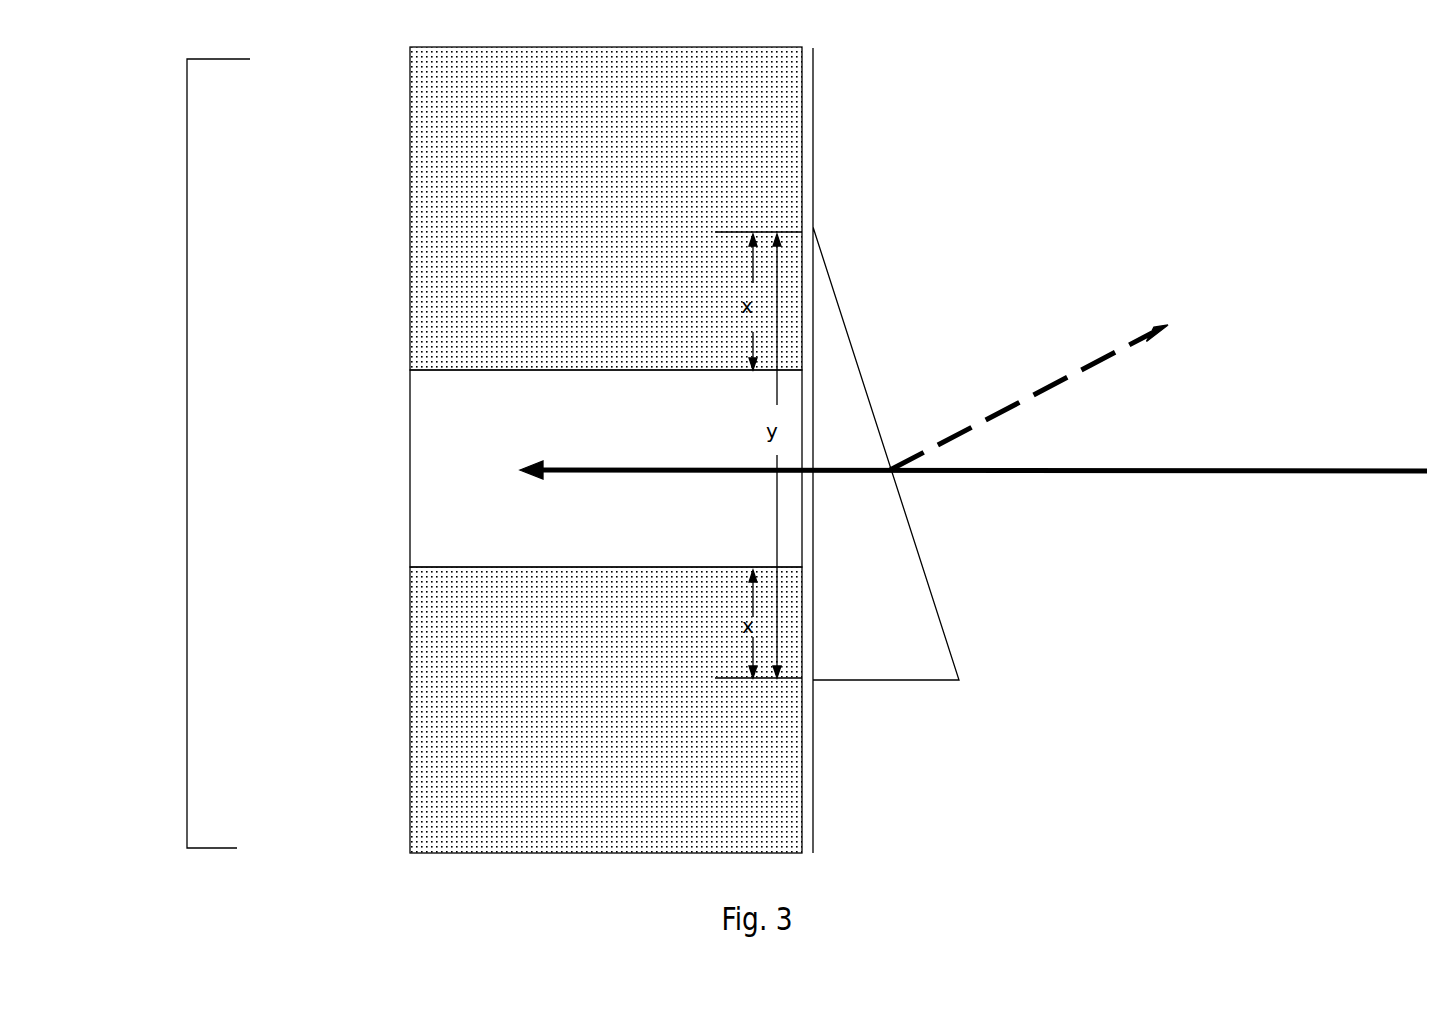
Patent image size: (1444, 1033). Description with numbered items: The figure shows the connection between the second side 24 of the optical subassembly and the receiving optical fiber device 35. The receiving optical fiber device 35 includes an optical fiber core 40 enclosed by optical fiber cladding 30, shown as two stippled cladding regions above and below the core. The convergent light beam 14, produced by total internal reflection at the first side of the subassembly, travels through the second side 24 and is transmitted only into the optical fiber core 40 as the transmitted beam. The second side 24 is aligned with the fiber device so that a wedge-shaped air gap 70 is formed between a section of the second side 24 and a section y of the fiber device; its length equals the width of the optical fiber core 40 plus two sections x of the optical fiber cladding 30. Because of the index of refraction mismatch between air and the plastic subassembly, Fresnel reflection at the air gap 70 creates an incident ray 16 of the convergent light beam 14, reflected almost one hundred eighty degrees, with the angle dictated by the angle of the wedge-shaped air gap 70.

The convergent light beam 14 is at (973, 504).
The incident ray 16 is at (1121, 377).
The second side 24 is at (813, 158).
The optical fiber cladding 30 is at (606, 450).
The receiving optical fiber device 35 is at (187, 405).
The optical fiber core 40 is at (460, 457).
The air gap 70 is at (875, 633).